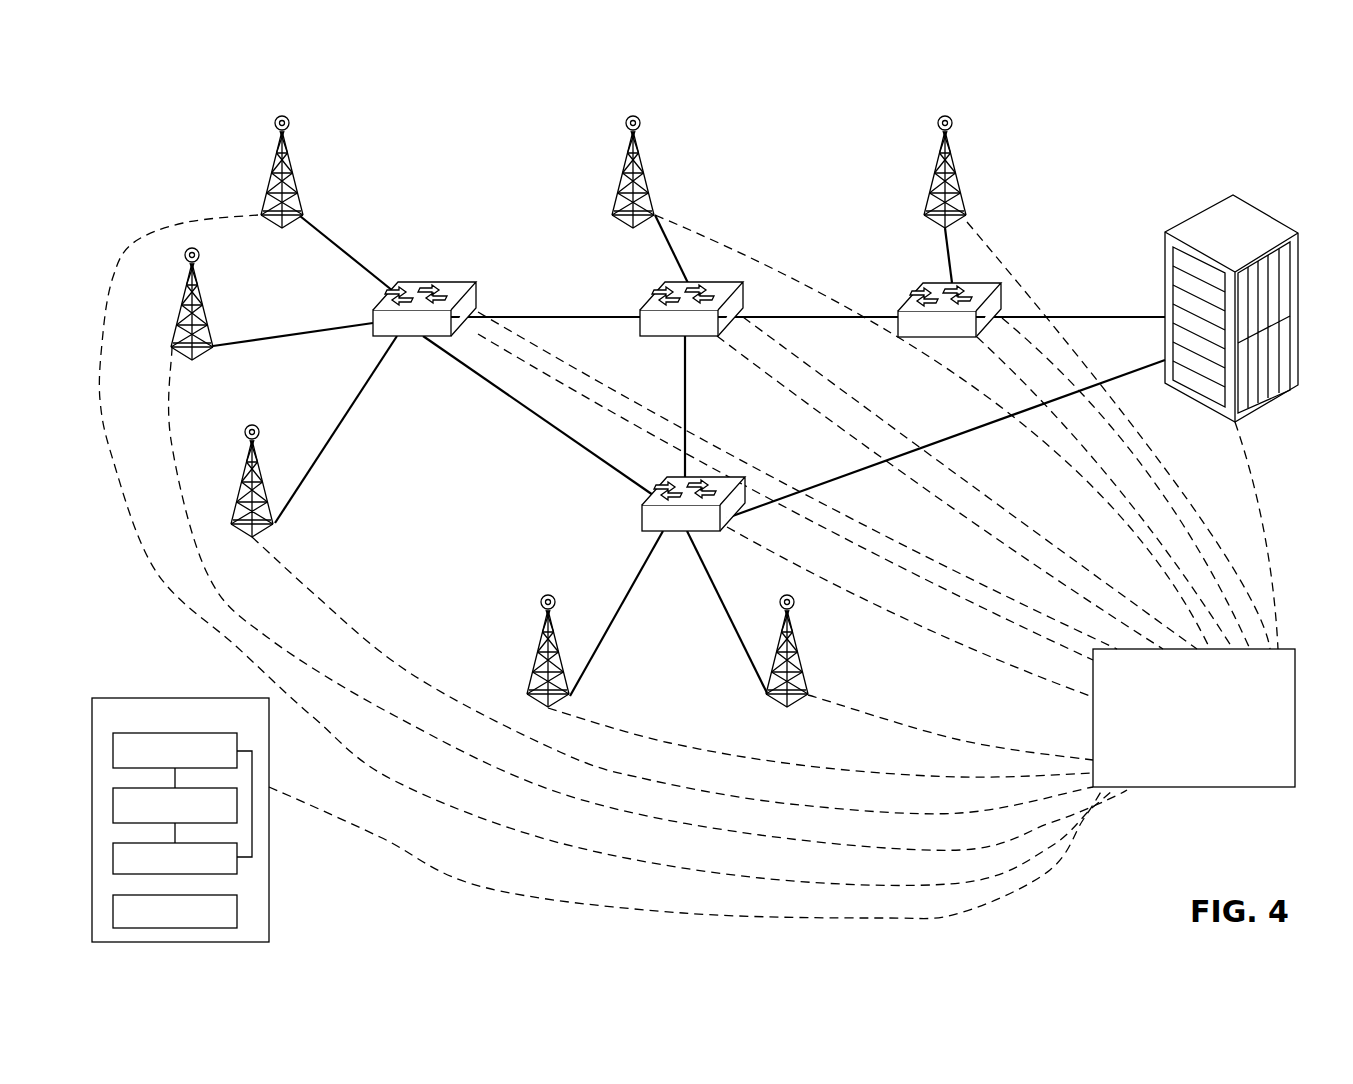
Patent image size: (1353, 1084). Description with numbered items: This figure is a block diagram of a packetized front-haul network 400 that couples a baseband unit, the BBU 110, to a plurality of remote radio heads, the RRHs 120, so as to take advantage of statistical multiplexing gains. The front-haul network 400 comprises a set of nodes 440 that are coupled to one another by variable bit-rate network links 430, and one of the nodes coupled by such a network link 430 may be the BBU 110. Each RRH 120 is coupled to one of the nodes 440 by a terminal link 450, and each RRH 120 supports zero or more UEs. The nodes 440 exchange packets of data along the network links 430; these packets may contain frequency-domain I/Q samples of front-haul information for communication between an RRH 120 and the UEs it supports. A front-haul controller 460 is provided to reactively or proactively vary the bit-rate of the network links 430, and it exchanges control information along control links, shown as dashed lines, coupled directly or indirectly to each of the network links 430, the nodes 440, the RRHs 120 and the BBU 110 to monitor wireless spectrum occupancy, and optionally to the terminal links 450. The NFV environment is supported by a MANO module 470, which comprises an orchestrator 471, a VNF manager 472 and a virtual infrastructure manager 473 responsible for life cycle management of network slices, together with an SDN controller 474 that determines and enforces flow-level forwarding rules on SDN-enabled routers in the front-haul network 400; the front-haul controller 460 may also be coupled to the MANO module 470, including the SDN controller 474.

The front-haul network 400 is at (1193, 113).
The BBU 110 is at (1277, 397).
The RRH 120 is at (290, 160).
The network link 430 is at (500, 316).
The node 440 is at (443, 282).
The terminal link 450 is at (327, 237).
The front-haul controller 460 is at (1194, 718).
The MANO module 470 is at (224, 820).
The orchestrator 471 is at (175, 750).
The VNF manager 472 is at (175, 805).
The virtual infrastructure manager 473 is at (175, 858).
The SDN controller 474 is at (175, 911).